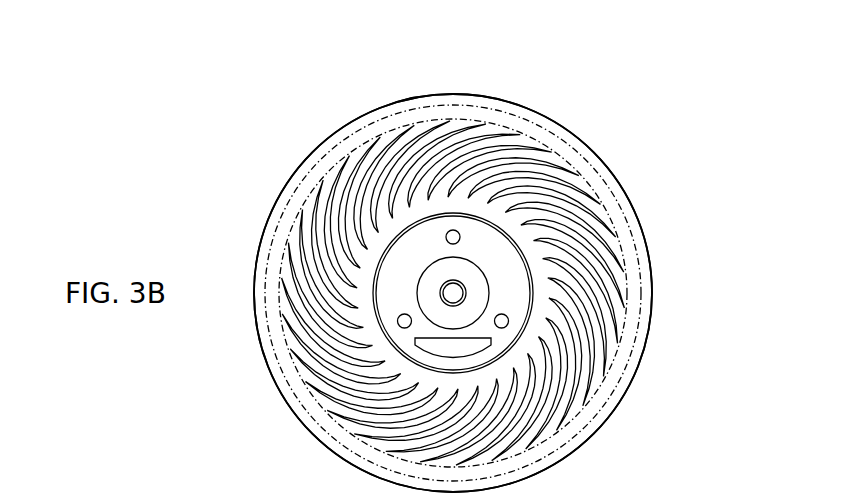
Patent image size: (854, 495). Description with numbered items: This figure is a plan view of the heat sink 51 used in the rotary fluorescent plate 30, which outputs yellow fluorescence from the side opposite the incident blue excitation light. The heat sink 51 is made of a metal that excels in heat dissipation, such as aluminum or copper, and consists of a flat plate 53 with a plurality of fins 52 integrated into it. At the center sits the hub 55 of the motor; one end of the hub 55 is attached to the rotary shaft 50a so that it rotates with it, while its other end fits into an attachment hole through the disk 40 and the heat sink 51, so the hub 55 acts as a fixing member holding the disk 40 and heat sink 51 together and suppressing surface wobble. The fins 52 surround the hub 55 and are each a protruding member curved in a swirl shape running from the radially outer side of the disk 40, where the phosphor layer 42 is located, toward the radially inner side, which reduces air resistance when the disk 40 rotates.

The rotary fluorescent plate 30 is at (548, 110).
The disk 40 is at (636, 222).
The phosphor layer 42 is at (594, 157).
The rotary shaft 50a is at (446, 281).
The heat sink 51 is at (497, 293).
The fins 52 is at (592, 352).
The flat plate 53 is at (612, 310).
The hub 55 is at (403, 265).